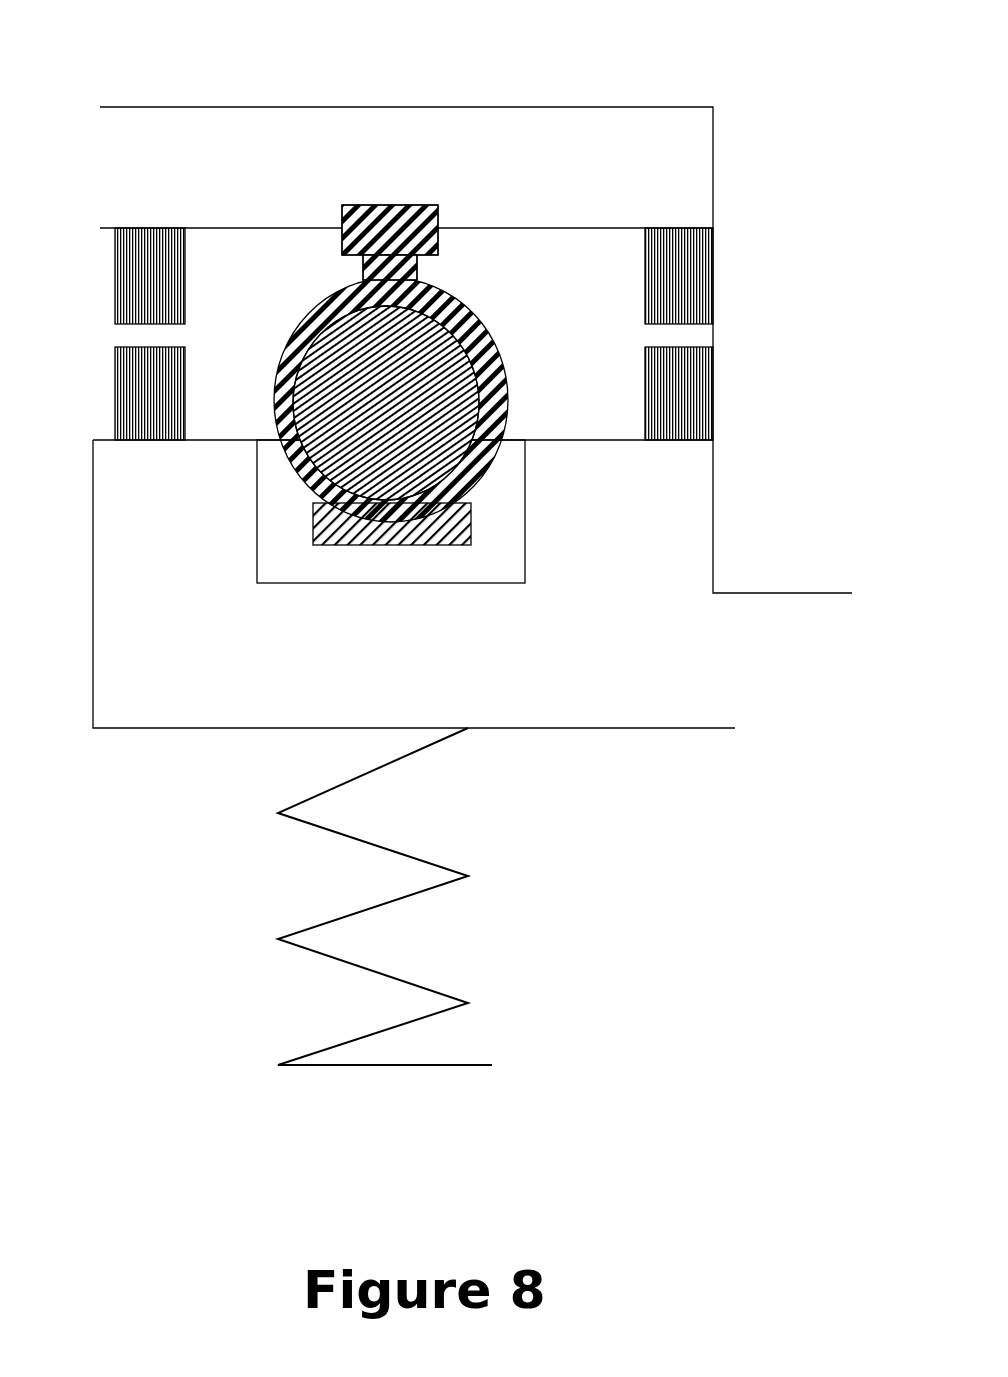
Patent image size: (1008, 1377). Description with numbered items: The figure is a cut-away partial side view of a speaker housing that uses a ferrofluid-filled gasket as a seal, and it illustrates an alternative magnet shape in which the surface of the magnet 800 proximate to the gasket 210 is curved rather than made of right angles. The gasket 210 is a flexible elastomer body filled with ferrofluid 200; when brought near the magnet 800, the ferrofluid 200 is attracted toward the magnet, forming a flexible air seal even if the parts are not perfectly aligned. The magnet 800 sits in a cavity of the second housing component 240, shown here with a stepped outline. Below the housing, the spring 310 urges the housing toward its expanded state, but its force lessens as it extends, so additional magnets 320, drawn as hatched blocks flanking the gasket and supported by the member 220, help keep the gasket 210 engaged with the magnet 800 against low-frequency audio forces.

The ferrofluid 200 is at (330, 362).
The gasket 210 is at (482, 318).
The support / stop block 220 is at (390, 203).
The second housing component 240 is at (677, 505).
The spring 310 is at (387, 778).
The additional magnets 320 is at (110, 266).
The magnet 800 is at (506, 494).